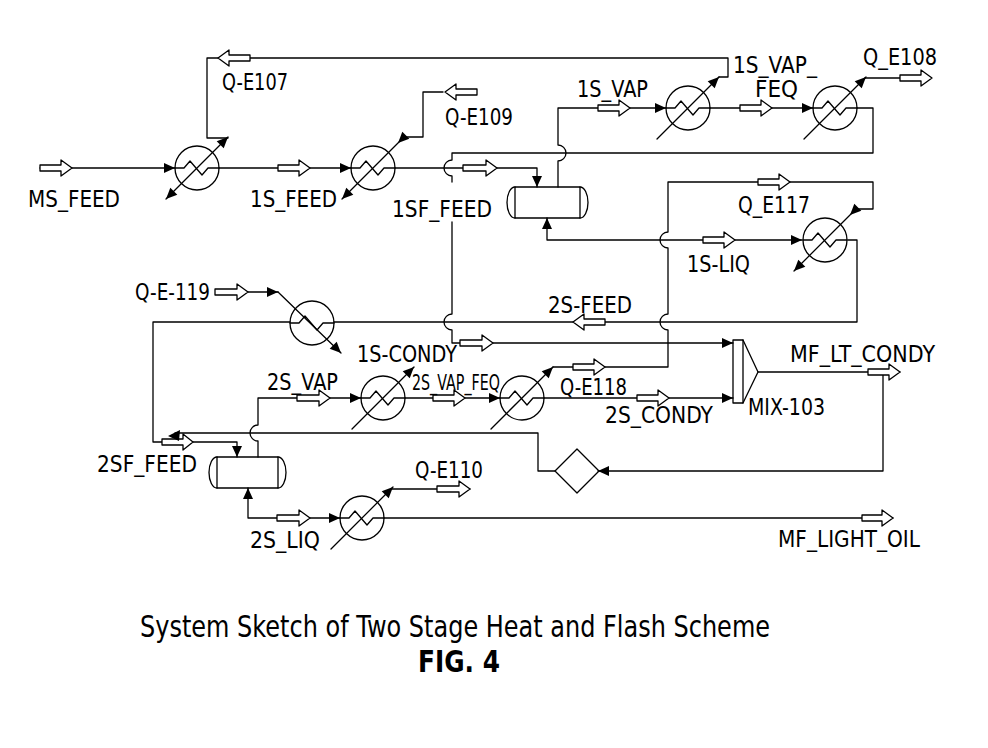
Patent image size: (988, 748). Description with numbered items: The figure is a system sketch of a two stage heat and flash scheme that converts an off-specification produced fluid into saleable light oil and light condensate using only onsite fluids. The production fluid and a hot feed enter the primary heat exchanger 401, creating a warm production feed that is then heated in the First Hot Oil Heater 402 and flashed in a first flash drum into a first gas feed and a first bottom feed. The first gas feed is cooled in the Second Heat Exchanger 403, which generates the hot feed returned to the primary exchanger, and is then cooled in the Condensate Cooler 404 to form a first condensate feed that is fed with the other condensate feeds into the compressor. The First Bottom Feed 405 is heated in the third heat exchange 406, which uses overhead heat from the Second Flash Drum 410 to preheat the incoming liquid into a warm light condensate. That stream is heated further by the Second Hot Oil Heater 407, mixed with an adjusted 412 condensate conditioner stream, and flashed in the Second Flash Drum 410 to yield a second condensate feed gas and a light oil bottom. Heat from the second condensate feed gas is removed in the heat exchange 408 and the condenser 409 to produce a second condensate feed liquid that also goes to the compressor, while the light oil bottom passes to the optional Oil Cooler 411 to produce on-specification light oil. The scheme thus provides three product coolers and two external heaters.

The primary heat exchanger 401 is at (197, 190).
The First Hot Oil Heater 402 is at (373, 190).
The Second Heat Exchanger 403 is at (687, 86).
The Condensate Cooler 404 is at (835, 86).
The First Bottom Feed 405 is at (570, 187).
The third heat exchange 406 is at (846, 233).
The Second Hot Oil Heater 407 is at (312, 300).
The heat exchange 408 is at (383, 420).
The condenser 409 is at (522, 376).
The Second Flash Drum 410 is at (223, 492).
The Oil Cooler 411 is at (360, 540).
The adjusted Condensate Conditioner 412 is at (590, 484).